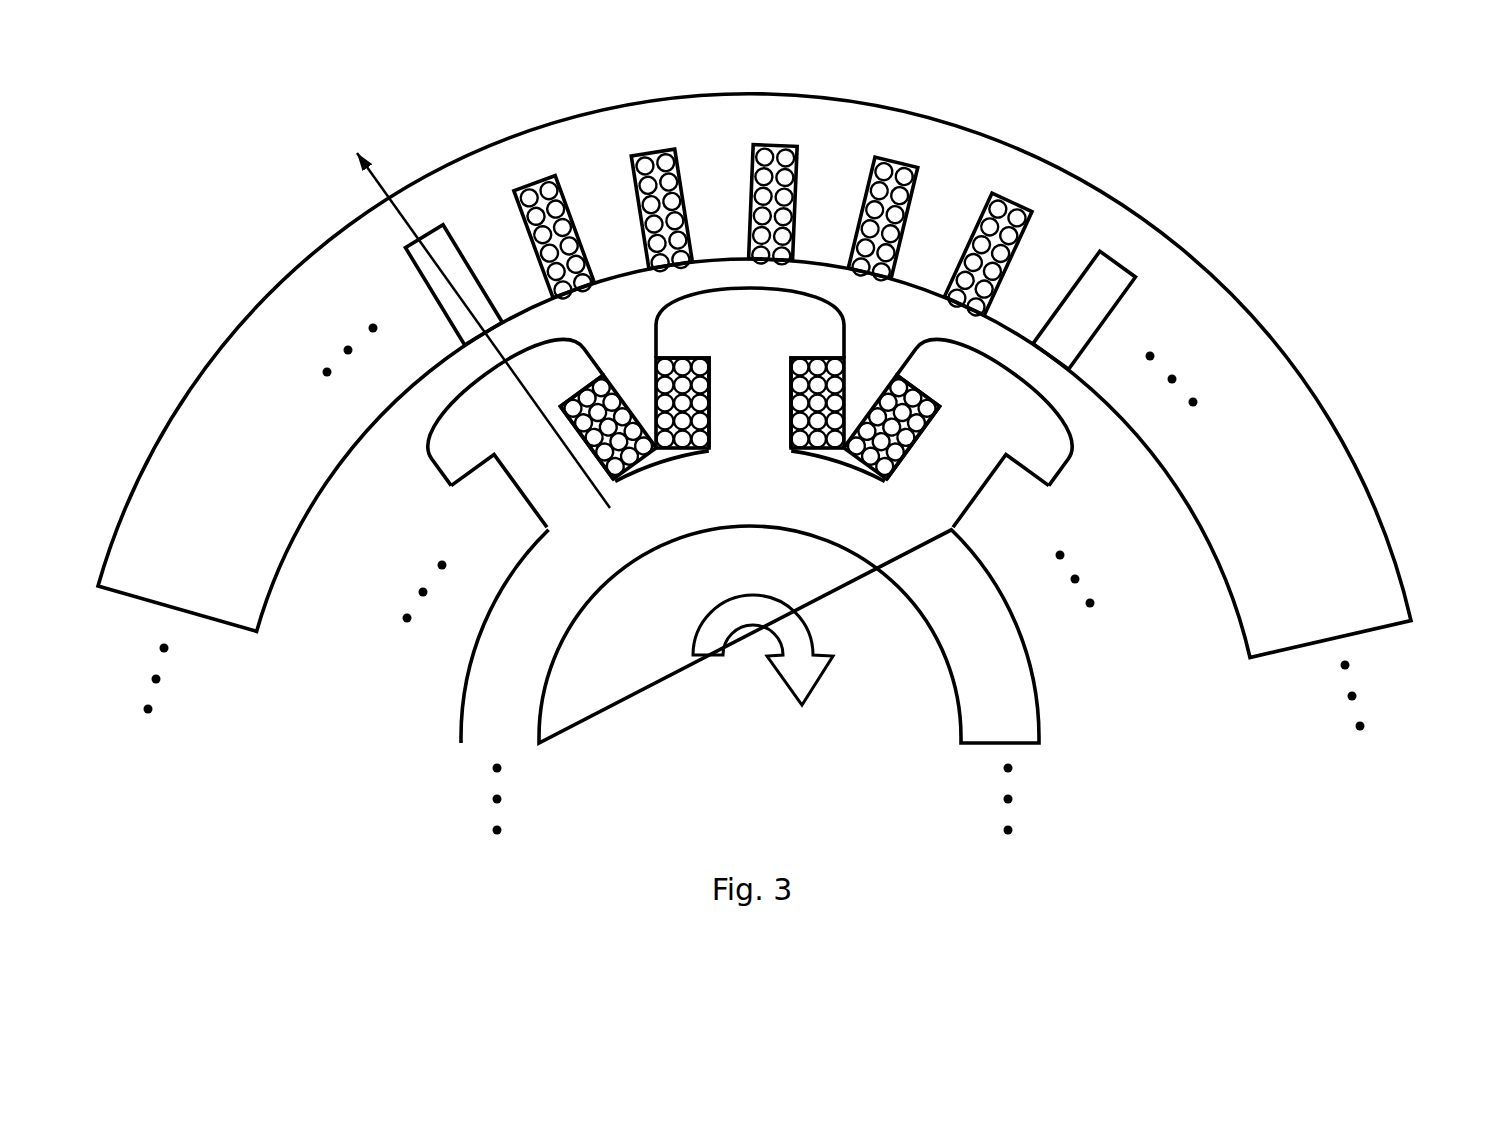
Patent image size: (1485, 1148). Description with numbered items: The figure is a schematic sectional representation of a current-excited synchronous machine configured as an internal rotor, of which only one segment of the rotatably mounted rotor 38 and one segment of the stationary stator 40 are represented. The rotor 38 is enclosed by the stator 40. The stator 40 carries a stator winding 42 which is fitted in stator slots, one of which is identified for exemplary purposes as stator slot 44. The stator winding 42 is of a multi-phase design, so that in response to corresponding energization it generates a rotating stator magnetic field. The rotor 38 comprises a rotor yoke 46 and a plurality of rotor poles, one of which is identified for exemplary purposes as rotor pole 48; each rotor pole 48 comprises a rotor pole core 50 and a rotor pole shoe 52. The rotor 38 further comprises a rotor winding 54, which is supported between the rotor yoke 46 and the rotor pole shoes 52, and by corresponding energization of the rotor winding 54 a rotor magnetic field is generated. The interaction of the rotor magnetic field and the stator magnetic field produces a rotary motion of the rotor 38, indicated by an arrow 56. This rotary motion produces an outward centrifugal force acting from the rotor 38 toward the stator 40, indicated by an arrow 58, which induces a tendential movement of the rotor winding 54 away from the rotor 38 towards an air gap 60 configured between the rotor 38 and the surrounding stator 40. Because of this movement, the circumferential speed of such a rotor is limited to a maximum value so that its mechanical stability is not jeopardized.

The rotor 38 is at (1065, 680).
The stator 40 is at (1298, 303).
The stator winding 42 is at (1048, 212).
The stator slot 44 is at (1003, 268).
The rotor yoke 46 is at (512, 684).
The rotor pole 48 is at (732, 462).
The rotor pole core 50 is at (743, 403).
The rotor pole shoe 52 is at (750, 313).
The rotor winding 54 is at (680, 470).
The arrow 56 is at (753, 618).
The arrow 58 is at (483, 333).
The air gap 60 is at (1097, 423).